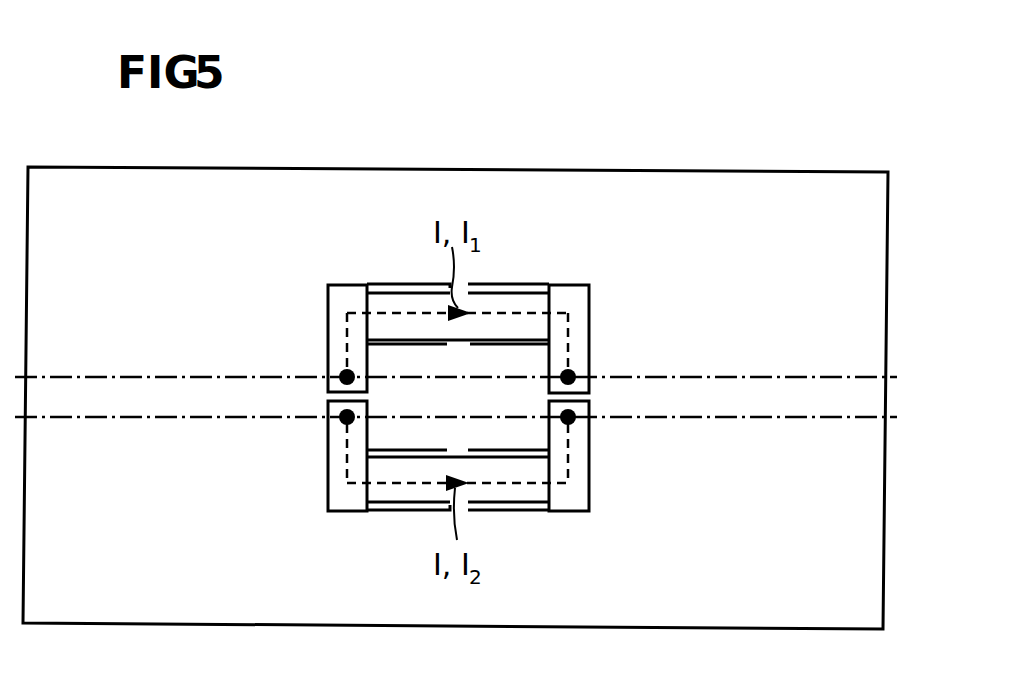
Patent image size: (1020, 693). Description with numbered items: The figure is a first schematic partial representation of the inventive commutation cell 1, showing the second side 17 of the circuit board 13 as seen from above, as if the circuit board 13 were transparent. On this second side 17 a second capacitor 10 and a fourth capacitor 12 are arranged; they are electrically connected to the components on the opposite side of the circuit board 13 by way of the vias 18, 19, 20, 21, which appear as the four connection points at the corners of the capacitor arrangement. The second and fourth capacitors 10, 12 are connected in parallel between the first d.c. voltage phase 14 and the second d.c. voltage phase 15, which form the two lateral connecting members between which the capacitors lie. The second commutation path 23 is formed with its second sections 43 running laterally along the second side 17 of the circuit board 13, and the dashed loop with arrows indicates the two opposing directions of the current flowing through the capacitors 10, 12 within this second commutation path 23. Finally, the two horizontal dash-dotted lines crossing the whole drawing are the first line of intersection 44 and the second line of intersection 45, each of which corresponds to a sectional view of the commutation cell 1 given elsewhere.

The commutation cell 1 is at (455, 344).
The second capacitor 10 is at (520, 297).
The fourth capacitor 12 is at (515, 495).
The circuit board 13 is at (455, 364).
The second side of the circuit board 17 is at (762, 180).
The first d.c. voltage phase 14 is at (333, 297).
The second d.c. voltage phase 15 is at (583, 297).
The via 18 is at (340, 421).
The via 19 is at (340, 372).
The via 20 is at (575, 421).
The via 21 is at (575, 372).
The second commutation path 23 is at (448, 275).
The second sections 43 is at (390, 297).
The first line of intersection 44 is at (75, 372).
The second line of intersection 45 is at (75, 421).